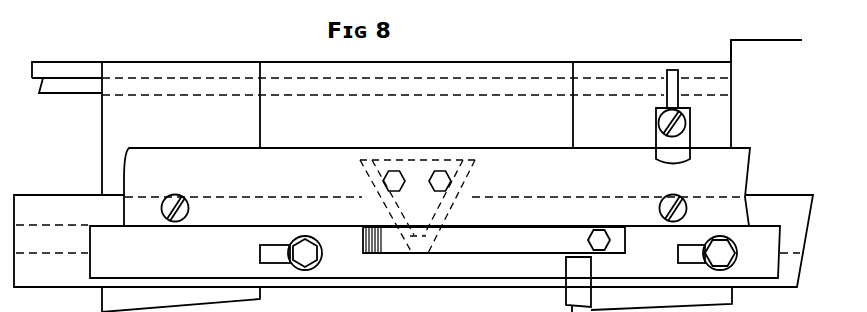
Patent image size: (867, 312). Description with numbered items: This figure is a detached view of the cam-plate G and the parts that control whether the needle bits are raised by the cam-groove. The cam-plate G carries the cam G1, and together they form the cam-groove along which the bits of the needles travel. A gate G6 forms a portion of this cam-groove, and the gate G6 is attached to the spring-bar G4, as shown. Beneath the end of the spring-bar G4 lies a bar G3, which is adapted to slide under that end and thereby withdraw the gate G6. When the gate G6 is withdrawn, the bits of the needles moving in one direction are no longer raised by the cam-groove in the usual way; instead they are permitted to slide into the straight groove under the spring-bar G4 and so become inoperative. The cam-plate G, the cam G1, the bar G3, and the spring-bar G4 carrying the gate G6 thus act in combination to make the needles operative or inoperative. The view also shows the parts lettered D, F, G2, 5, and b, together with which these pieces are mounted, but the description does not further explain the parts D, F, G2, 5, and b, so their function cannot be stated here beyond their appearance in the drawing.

The bed or frame rail D is at (417, 176).
The clamping screw housing F is at (673, 117).
The cam-plate G is at (438, 212).
The cam G1 is at (417, 206).
The lower guide rail G2 is at (413, 241).
The bar G3 is at (435, 252).
The spring-bar G4 is at (494, 240).
The gate G6 is at (417, 207).
The hexagonal head bolt 5 is at (723, 253).
The lower block b is at (540, 284).